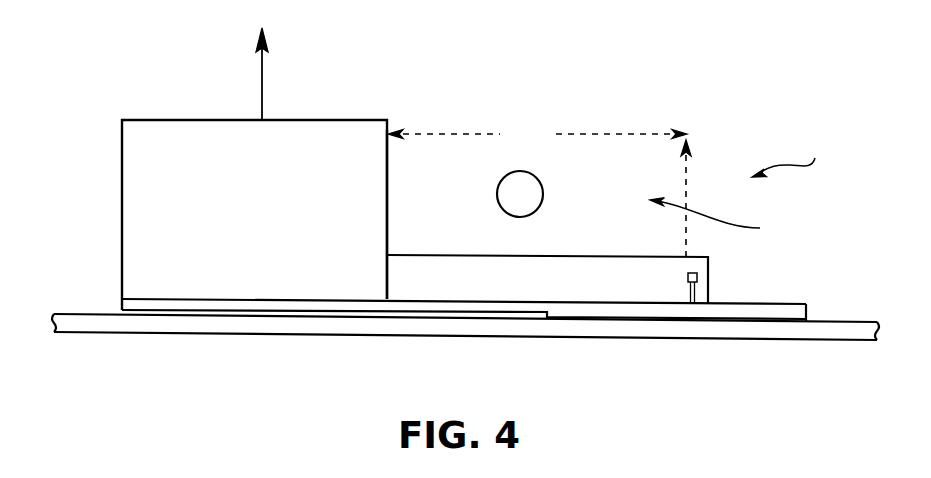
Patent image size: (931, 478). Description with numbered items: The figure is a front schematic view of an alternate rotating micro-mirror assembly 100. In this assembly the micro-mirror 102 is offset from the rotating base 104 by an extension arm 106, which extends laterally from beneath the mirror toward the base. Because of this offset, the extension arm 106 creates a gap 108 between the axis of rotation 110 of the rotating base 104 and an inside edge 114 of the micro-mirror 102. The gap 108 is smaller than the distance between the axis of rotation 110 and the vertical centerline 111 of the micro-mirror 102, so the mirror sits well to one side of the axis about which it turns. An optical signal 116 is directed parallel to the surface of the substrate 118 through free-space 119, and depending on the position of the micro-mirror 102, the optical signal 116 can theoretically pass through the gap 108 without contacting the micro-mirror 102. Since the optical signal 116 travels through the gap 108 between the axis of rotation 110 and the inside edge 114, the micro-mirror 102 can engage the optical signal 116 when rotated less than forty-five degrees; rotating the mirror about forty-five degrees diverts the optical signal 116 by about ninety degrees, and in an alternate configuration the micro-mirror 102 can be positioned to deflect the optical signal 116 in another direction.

The rotating micro-mirror assembly 100 is at (797, 155).
The micro-mirror 102 is at (147, 192).
The rotating base 104 is at (806, 313).
The extension arm 106 is at (553, 258).
The gap 108 is at (537, 134).
The axis of rotation 110 is at (687, 180).
The vertical centerline 111 is at (262, 85).
The inside edge 114 is at (388, 207).
The optical signal 116 is at (533, 194).
The substrate 118 is at (93, 314).
The free-space 119 is at (730, 220).